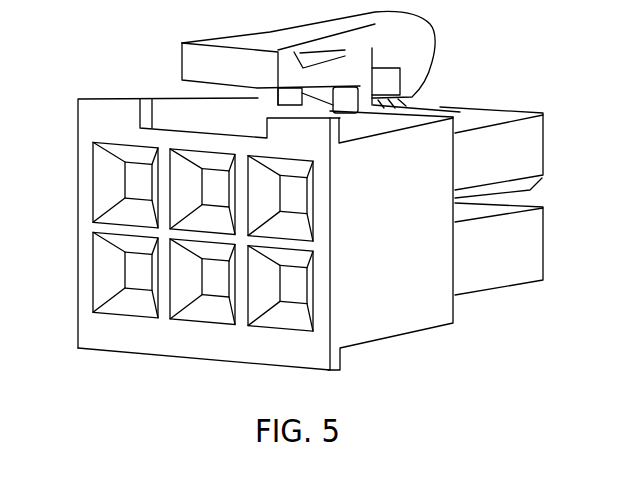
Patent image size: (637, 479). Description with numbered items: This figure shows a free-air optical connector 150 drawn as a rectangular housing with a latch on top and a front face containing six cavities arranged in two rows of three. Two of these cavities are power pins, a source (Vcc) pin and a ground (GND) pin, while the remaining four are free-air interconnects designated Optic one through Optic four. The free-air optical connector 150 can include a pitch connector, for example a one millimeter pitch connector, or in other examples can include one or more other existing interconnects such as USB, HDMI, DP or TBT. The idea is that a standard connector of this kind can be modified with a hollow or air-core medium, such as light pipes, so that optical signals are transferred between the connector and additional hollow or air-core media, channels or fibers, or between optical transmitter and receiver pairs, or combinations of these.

The free-air optical connector 150 is at (301, 191).